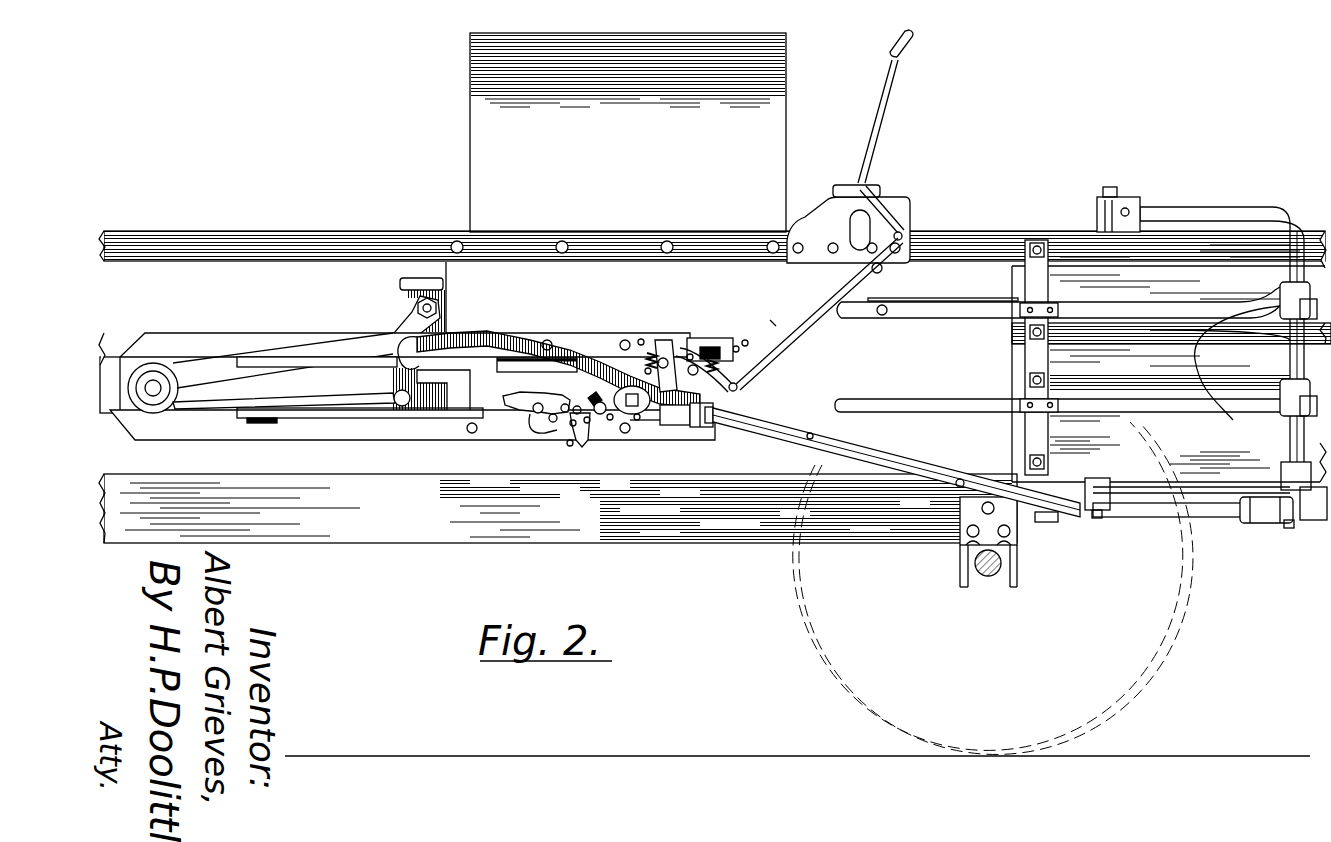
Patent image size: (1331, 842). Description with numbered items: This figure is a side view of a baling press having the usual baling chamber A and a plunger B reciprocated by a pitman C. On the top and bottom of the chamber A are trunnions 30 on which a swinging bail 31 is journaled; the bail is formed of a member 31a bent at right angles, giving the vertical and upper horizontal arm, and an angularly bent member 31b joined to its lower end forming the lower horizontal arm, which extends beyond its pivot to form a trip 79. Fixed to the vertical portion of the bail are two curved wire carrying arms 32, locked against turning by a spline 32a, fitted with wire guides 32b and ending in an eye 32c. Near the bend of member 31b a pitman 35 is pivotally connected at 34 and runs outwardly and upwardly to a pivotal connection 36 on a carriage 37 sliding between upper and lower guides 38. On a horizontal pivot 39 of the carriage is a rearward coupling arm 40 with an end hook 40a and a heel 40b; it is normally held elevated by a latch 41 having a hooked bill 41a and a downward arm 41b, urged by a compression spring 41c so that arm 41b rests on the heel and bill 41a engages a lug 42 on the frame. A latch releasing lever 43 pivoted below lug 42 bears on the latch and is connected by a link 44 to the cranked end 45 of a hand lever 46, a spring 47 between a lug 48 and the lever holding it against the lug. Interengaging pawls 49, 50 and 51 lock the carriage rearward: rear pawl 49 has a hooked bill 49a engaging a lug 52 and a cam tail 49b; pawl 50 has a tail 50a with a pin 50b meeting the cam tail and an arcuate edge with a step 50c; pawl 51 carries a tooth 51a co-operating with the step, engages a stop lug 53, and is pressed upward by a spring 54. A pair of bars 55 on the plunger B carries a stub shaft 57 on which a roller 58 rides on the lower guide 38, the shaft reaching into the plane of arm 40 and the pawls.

The trunnions 30 is at (1096, 222).
The swinging bail 31 is at (1200, 206).
The bail member 31a is at (1307, 228).
The angularly bent member 31b is at (1200, 497).
The wire carrying arms 32 is at (1157, 400).
The spline 32a is at (1287, 350).
The wire guides 32b is at (1057, 307).
The eye 32c is at (907, 320).
The pivotal connection 34 is at (1283, 522).
The pitman 35 is at (958, 486).
The pivotal connection 36 is at (720, 437).
The carriage 37 is at (638, 419).
The guides 38 is at (338, 364).
The horizontal pivot 39 is at (690, 425).
The coupling arm 40 is at (447, 335).
The hook 40a is at (395, 330).
The heel 40b is at (810, 438).
The latch 41 is at (660, 358).
The hooked bill 41a is at (692, 354).
The downwardly extended arm 41b is at (641, 340).
The compression spring 41c is at (649, 368).
The lug 42 is at (702, 350).
The latch releasing lever 43 is at (776, 330).
The link 44 is at (793, 340).
The cranked end 45 is at (885, 212).
The hand operated lever 46 is at (892, 102).
The spring 47 is at (748, 340).
The lug 48 is at (737, 347).
The rear pawl 49 is at (540, 414).
The hooked bill 49a is at (503, 395).
The cam tail 49b is at (560, 395).
The pawl 50 is at (547, 432).
The tail 50a is at (573, 395).
The pin 50b is at (574, 426).
The step 50c is at (570, 445).
The pawl 51 is at (588, 422).
The tooth 51a is at (567, 393).
The lug 52 is at (270, 425).
The stop lug 53 is at (611, 419).
The spring 54 is at (632, 423).
The bars 55 is at (273, 388).
The stub shaft 57 is at (153, 380).
The roller 58 is at (166, 362).
The trip 79 is at (1045, 520).
The baling chamber A is at (1053, 362).
The plunger B is at (432, 280).
The pitman C is at (113, 340).